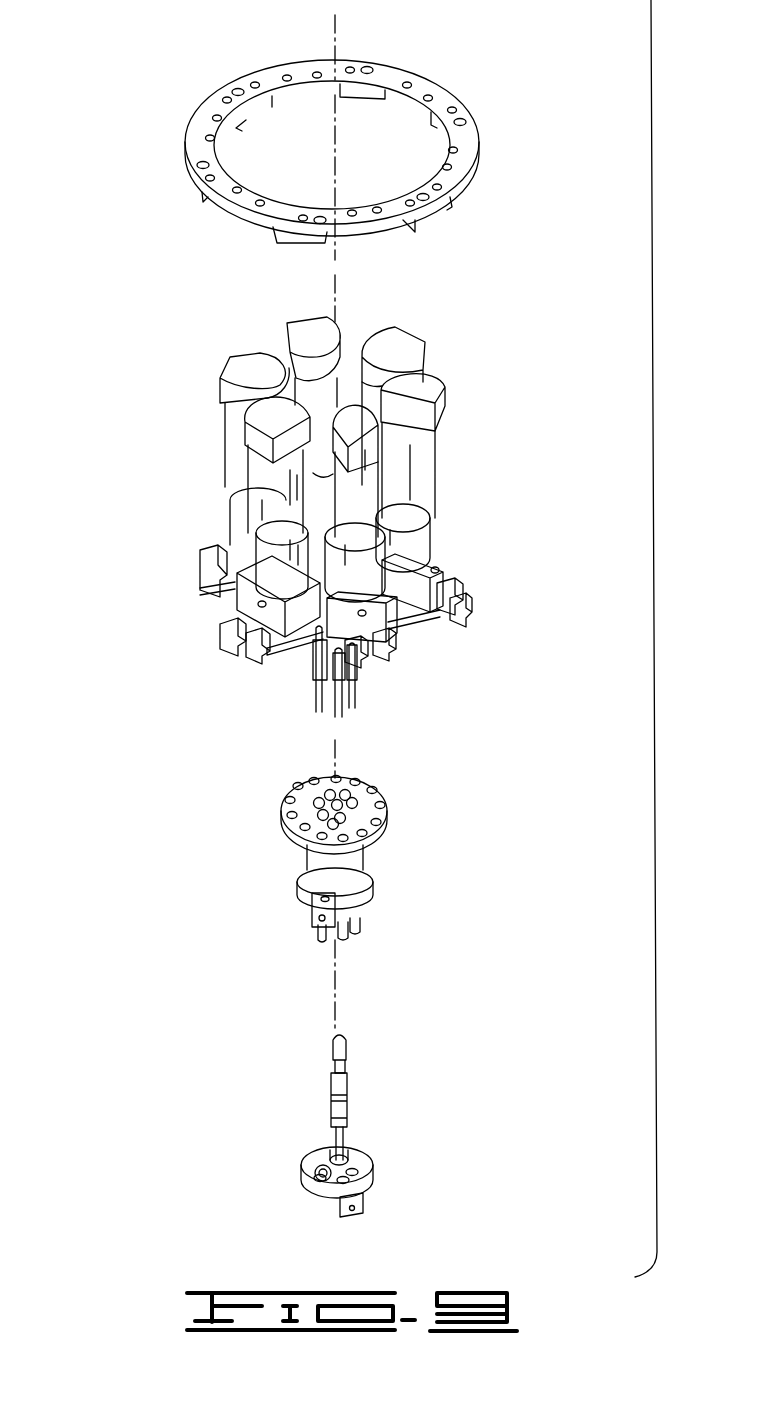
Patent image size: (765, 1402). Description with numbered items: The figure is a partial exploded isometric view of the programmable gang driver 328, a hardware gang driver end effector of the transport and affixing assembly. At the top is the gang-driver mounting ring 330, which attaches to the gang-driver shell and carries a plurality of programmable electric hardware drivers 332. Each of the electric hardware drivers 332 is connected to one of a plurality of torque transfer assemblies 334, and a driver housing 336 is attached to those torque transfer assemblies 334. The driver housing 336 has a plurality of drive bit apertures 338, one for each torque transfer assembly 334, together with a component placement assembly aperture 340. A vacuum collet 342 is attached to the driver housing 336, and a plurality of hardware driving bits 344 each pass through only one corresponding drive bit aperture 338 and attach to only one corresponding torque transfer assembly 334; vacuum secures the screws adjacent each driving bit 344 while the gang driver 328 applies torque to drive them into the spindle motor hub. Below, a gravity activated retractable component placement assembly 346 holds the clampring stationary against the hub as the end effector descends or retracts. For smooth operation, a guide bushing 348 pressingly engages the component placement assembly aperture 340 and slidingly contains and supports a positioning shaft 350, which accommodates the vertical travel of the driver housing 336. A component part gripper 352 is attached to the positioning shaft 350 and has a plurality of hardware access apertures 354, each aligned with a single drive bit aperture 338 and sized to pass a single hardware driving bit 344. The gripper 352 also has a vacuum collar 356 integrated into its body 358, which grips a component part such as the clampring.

The programmable gang driver 328 is at (480, 88).
The gang-driver mounting ring 330 is at (202, 110).
The programmable electric hardware drivers 332 is at (247, 487).
The torque transfer assemblies 334 is at (323, 630).
The driver housing 336 is at (288, 793).
The drive bit apertures 338 is at (330, 825).
The component placement assembly aperture 340 is at (340, 800).
The vacuum collet 342 is at (303, 898).
The hardware driving bits 344 is at (340, 718).
The gravity activated retractable component placement assembly 346 is at (328, 1053).
The guide bushing 348 is at (347, 1080).
The positioning shaft 350 is at (347, 1135).
The component part gripper 352 is at (378, 1176).
The hardware access apertures 354 is at (320, 1163).
The vacuum collar 356 is at (340, 1210).
The body 358 is at (320, 1198).